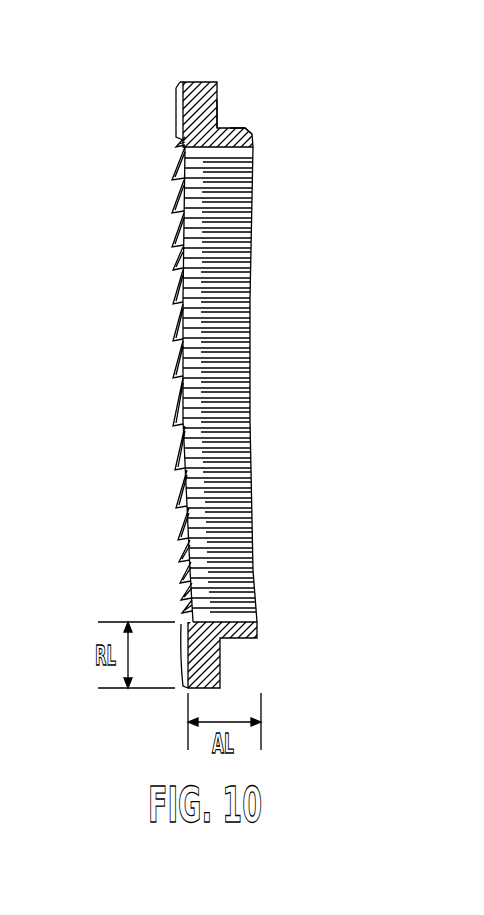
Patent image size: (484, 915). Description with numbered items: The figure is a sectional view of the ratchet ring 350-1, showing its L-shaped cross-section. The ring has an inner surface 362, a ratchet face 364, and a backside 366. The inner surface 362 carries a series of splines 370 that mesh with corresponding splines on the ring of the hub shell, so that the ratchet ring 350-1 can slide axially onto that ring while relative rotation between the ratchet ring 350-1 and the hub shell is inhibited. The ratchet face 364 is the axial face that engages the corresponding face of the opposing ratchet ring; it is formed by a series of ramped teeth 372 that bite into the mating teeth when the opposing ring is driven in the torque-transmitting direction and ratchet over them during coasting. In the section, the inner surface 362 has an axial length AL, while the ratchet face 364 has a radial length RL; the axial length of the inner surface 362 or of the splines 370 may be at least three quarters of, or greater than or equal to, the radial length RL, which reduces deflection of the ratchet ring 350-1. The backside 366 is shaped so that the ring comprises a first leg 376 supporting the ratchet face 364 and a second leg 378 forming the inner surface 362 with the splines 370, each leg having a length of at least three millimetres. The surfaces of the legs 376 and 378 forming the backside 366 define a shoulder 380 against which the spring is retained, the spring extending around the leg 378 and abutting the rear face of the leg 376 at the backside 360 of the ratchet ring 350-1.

The ratchet ring 350-1 is at (242, 350).
The backside of ratchet ring 360 is at (221, 663).
The inner surface 362 is at (234, 483).
The ratchet face 364 is at (141, 375).
The backside 366 is at (242, 350).
The splines 370 is at (236, 378).
The ramped teeth 372 is at (172, 421).
The first leg 376 is at (176, 106).
The second leg 378 is at (244, 127).
The shoulder 380 is at (218, 113).